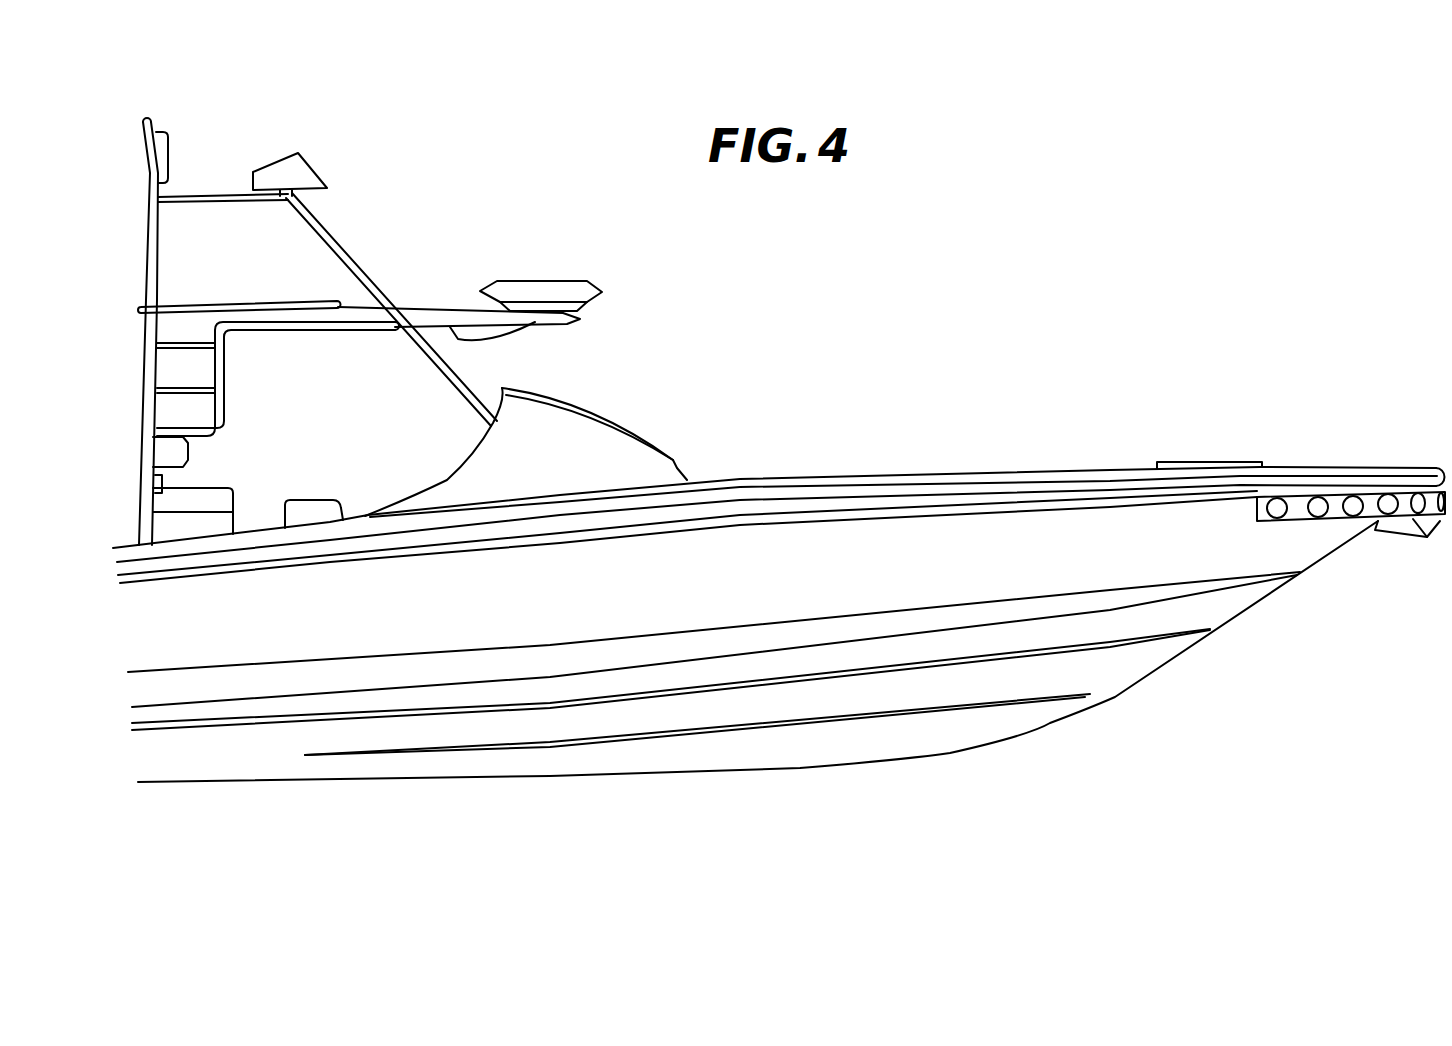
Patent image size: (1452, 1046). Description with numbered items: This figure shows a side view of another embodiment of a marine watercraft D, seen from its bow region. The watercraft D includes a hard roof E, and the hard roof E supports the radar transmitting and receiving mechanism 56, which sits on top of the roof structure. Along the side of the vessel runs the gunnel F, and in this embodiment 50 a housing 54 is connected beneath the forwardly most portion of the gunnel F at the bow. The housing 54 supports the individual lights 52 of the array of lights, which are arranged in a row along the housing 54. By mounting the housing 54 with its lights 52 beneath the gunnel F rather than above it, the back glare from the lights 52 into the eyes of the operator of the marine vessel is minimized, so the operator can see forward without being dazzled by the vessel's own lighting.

The marine watercraft D is at (771, 349).
The hard roof E is at (408, 306).
The gunnel F is at (1155, 480).
The embodiment 50 is at (1371, 549).
The individual lights 52 is at (1352, 513).
The housing 54 is at (1297, 521).
The radar transmitting and receiving mechanism 56 is at (549, 281).